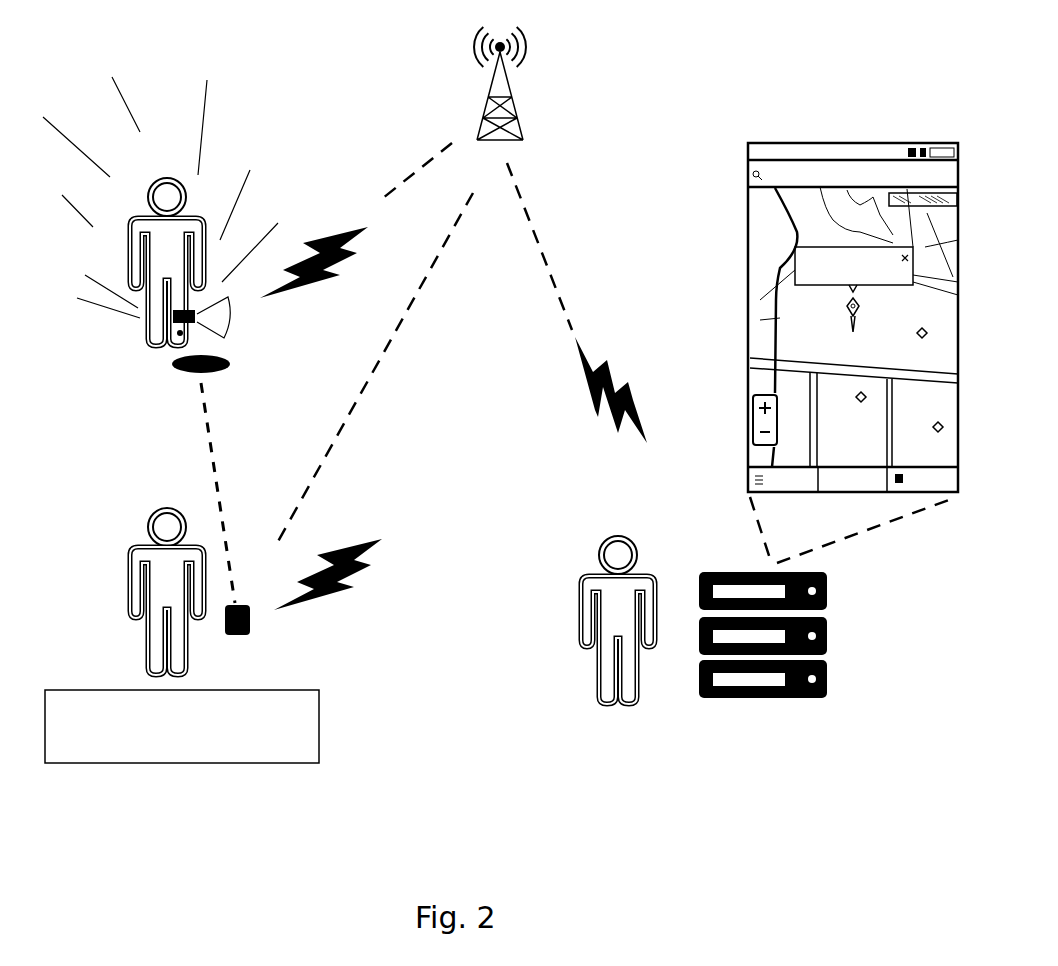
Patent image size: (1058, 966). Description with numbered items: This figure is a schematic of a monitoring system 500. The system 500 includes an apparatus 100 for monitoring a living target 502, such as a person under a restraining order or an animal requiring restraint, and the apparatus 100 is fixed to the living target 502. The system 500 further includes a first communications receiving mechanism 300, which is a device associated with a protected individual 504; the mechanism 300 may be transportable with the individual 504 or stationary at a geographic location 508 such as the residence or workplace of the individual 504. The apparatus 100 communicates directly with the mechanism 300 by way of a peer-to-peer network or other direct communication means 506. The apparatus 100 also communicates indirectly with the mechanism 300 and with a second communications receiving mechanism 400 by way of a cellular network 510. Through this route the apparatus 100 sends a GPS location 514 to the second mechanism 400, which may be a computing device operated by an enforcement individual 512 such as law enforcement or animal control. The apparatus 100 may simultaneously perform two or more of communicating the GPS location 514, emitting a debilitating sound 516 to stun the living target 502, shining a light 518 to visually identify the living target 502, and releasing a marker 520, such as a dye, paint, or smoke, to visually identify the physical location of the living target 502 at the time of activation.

The apparatus 100 is at (172, 323).
The first communications receiving mechanism 300 is at (243, 637).
The second communications receiving mechanism 400 is at (830, 600).
The system 500 is at (692, 58).
The living target 502 is at (130, 233).
The protected individual 504 is at (133, 573).
The direct communication means 506 is at (205, 432).
The geographic location 508 is at (182, 726).
The cellular network 510 is at (533, 55).
The enforcement individual 512 is at (590, 597).
The GPS location 514 is at (750, 248).
The debilitating sound 516 is at (203, 128).
The light 518 is at (225, 333).
The marker 520 is at (172, 365).